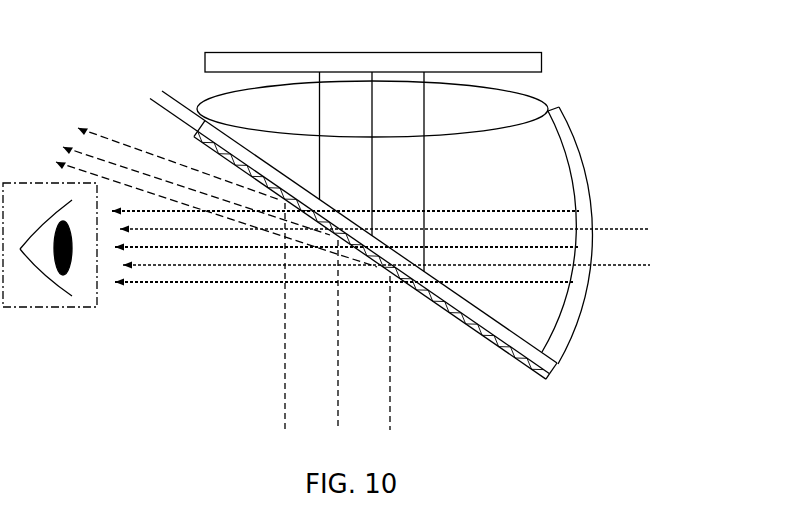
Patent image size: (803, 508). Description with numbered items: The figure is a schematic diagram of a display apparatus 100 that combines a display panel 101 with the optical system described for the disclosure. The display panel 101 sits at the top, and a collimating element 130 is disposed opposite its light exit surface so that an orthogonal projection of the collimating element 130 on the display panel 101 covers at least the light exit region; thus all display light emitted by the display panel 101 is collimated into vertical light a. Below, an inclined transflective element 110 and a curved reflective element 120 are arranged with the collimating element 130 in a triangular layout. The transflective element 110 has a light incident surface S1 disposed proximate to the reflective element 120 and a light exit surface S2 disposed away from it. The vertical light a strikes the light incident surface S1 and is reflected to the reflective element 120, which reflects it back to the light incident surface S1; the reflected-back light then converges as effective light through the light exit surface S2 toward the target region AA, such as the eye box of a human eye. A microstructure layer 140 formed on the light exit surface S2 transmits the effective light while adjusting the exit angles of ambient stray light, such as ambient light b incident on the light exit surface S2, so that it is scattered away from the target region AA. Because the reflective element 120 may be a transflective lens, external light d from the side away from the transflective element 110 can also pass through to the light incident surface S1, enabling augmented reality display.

The display apparatus 100 is at (68, 36).
The display panel 101 is at (528, 63).
The collimating element 130 is at (523, 102).
The reflective element 120 is at (583, 187).
The transflective element 110 is at (396, 237).
The microstructure layer 140 is at (500, 355).
The light incident surface S1 is at (357, 222).
The light exit surface S2 is at (345, 235).
The vertical light a is at (379, 172).
The ambient light b is at (328, 316).
The light d is at (381, 247).
The target region AA is at (40, 310).